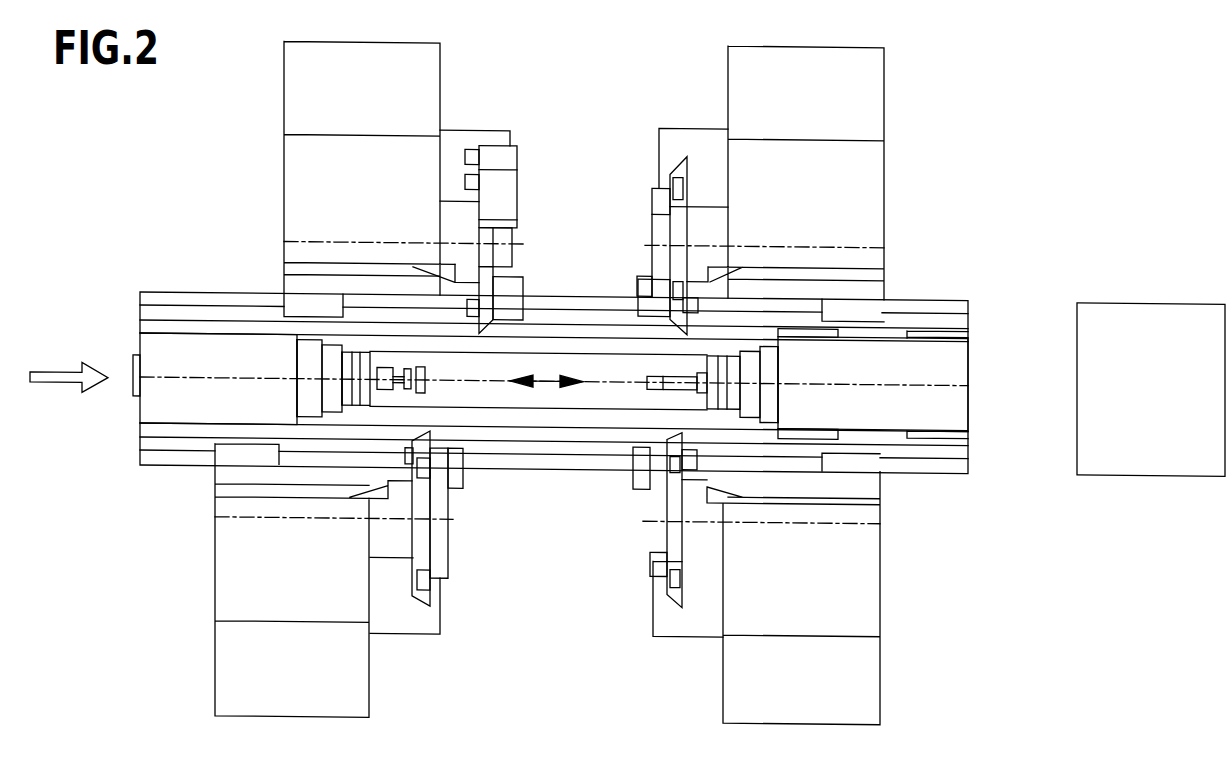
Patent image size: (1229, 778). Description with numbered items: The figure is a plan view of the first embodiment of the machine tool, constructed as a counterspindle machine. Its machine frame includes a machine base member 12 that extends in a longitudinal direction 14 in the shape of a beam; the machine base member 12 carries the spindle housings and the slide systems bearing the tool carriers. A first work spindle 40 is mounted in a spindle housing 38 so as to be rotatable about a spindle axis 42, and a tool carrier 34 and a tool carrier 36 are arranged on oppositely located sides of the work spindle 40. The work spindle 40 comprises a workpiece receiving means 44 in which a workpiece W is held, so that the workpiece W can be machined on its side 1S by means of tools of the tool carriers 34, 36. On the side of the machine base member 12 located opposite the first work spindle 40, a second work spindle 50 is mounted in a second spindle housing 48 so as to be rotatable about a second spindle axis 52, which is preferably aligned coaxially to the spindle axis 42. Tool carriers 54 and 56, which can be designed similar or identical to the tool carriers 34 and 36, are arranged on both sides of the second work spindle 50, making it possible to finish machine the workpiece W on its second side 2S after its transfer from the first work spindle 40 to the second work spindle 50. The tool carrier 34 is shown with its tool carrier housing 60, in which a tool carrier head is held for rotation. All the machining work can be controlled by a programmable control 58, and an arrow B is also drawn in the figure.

The machine base member 12 is at (507, 468).
The longitudinal direction 14 is at (550, 377).
The tool carrier 34 is at (300, 188).
The tool carrier 36 is at (305, 612).
The spindle housing 38 is at (178, 407).
The work spindle 40 is at (308, 358).
The spindle axis 42 is at (162, 377).
The workpiece receiving means 44 is at (363, 405).
The second spindle housing 48 is at (945, 410).
The second work spindle 50 is at (767, 401).
The second spindle axis 52 is at (930, 377).
The tool carrier 54 is at (858, 600).
The tool carrier 56 is at (870, 155).
The programmable control 58 is at (1140, 311).
The tool carrier housing 60 is at (300, 95).
The workpiece W is at (377, 360).
The side of the workpiece 1S is at (400, 357).
The second side of the workpiece 2S is at (663, 388).
The workpiece feed direction B is at (69, 357).